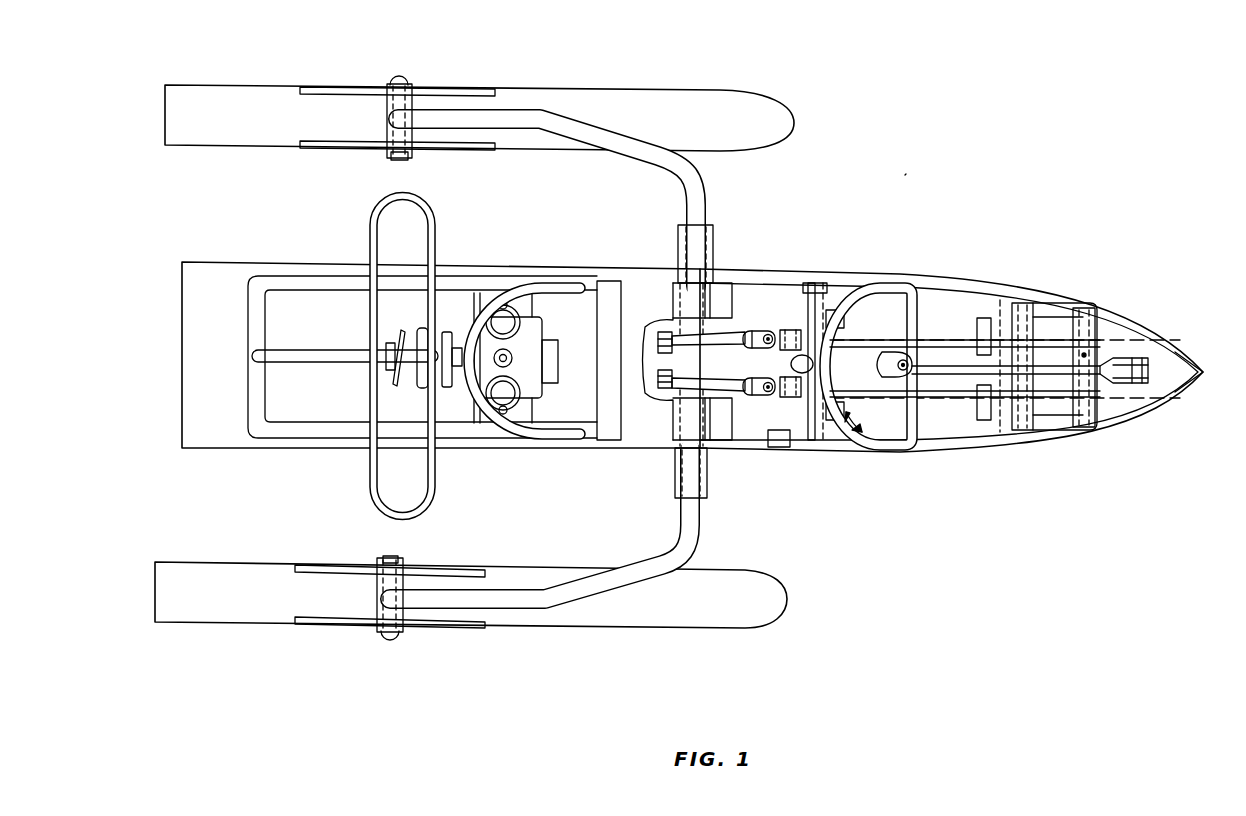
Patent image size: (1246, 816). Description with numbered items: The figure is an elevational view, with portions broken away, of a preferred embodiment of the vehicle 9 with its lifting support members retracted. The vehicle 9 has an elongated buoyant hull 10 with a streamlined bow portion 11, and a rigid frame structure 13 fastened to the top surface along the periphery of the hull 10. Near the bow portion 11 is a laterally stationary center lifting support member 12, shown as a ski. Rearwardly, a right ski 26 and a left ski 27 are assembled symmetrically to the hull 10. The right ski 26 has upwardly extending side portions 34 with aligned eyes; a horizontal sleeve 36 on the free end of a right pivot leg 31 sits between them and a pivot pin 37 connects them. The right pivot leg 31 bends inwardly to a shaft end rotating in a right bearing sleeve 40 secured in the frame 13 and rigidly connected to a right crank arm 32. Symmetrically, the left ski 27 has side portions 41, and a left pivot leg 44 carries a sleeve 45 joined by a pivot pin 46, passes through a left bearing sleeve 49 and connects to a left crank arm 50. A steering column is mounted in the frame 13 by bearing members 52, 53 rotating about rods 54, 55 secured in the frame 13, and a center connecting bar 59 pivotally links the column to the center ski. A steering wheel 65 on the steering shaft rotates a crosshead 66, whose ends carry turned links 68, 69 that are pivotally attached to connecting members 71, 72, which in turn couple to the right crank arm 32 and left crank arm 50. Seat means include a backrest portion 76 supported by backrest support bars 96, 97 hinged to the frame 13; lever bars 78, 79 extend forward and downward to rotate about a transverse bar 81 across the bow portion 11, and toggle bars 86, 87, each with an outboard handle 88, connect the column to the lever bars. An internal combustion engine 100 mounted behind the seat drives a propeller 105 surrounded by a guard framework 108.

The vehicle 9 is at (910, 172).
The hull 10 is at (240, 254).
The bow portion 11 is at (1125, 313).
The center lifting support member 12 is at (1160, 342).
The frame structure 13 is at (487, 437).
The right ski 26 is at (696, 612).
The left ski 27 is at (712, 108).
The right pivot leg 31 is at (566, 595).
The right crank arm 32 is at (680, 393).
The side portions 34 is at (446, 569).
The horizontal sleeve 36 is at (378, 583).
The pivot pin 37 is at (390, 632).
The right bearing sleeve 40 is at (675, 481).
The side portions 41 is at (470, 88).
The left pivot leg 44 is at (638, 153).
The sleeve 45 is at (388, 130).
The pivot pin 46 is at (397, 84).
The left bearing sleeve 49 is at (680, 250).
The left crank arm 50 is at (680, 330).
The bearing member 52 is at (850, 442).
The bearing member 53 is at (806, 330).
The rod 54 is at (832, 448).
The rod 55 is at (836, 330).
The center connecting bar 59 is at (1062, 442).
The steering wheel 65 is at (888, 446).
The crosshead 66 is at (800, 442).
The link 68 is at (785, 445).
The link 69 is at (783, 330).
The right connecting member 71 is at (738, 442).
The left connecting member 72 is at (748, 330).
The backrest portion 76 is at (605, 434).
The lever bar 78 is at (1008, 442).
The lever bar 79 is at (1008, 330).
The transverse bar 81 is at (1048, 442).
The right toggle bar 86 is at (950, 442).
The left toggle bar 87 is at (957, 330).
The handle 88 is at (985, 318).
The backrest support bar 96 is at (758, 446).
The backrest support bar 97 is at (792, 340).
The internal combustion engine 100 is at (535, 338).
The propeller 105 is at (398, 381).
The guard framework 108 is at (370, 486).